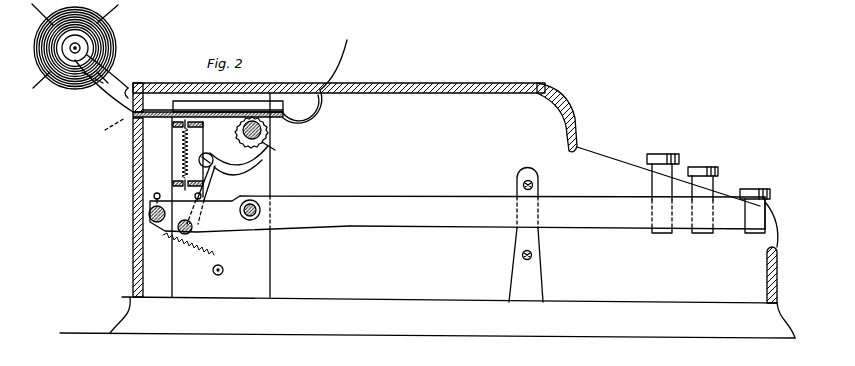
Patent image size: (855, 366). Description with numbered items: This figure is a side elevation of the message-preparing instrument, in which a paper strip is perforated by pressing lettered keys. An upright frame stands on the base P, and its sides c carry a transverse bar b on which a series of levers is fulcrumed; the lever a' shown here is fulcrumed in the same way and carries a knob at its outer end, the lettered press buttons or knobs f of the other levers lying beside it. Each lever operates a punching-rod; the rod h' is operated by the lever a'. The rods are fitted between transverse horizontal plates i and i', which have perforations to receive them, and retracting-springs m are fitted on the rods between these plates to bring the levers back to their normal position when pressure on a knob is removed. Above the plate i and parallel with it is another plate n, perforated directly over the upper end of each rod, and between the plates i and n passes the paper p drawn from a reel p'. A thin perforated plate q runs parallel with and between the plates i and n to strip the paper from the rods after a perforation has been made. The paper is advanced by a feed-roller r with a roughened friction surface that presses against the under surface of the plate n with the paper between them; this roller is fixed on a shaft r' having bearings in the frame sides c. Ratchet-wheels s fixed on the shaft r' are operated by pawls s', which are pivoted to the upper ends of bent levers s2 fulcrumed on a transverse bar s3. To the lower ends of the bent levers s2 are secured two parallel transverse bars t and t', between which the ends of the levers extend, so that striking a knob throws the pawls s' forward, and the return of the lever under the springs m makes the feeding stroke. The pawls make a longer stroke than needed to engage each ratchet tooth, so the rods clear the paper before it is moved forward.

The reel p' is at (75, 46).
The paper p is at (104, 85).
The thin perforated plate q is at (109, 130).
The plate n is at (240, 81).
The feed-roller r is at (262, 132).
The shaft r' is at (277, 150).
The ratchet-wheel s is at (239, 154).
The pawl s' is at (238, 171).
The bent lever s2 is at (204, 195).
The transverse bar s3 is at (193, 247).
The punching-rod h' is at (204, 152).
The transverse horizontal plate i is at (181, 126).
The transverse horizontal plate i' is at (179, 182).
The retracting-spring m is at (176, 158).
The transverse bar t is at (139, 197).
The transverse bar t' is at (134, 217).
The side of the frame c is at (250, 196).
The transverse bar b is at (250, 220).
The lever a' is at (502, 212).
The press button or knob f is at (708, 188).
The base P is at (427, 292).